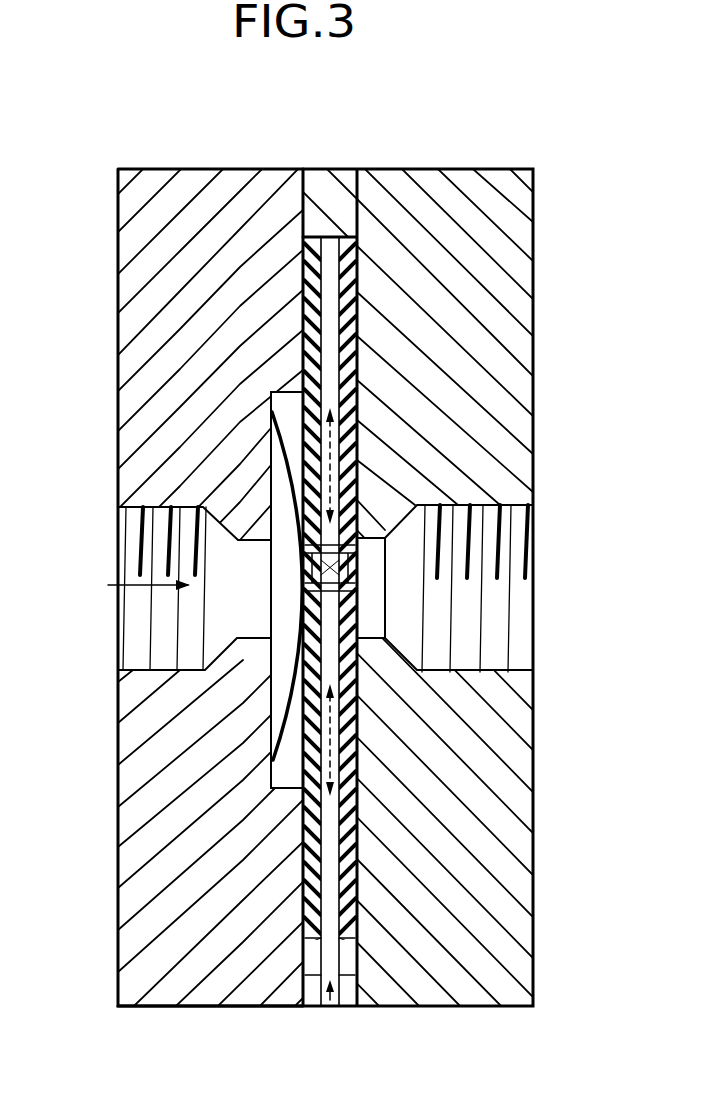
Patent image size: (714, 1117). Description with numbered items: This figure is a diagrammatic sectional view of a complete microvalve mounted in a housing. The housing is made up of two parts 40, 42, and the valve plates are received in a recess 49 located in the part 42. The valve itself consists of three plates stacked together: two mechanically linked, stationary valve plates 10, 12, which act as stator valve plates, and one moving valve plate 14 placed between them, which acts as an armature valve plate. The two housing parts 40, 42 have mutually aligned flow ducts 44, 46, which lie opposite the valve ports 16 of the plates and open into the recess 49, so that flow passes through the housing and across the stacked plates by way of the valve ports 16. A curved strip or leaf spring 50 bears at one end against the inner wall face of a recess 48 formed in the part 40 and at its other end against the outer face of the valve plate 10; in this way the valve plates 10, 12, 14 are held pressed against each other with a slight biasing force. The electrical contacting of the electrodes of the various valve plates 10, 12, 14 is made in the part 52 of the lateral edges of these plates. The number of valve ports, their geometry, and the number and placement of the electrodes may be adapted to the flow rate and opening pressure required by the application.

The stationary valve plate 10 is at (303, 250).
The stationary valve plate 12 is at (352, 237).
The moving valve plate 14 is at (312, 870).
The valve ports 16 is at (345, 580).
The housing part 40 is at (145, 318).
The housing part 42 is at (533, 347).
The flow duct 44 is at (130, 617).
The flow duct 46 is at (520, 617).
The recess 48 is at (280, 682).
The recess 49 is at (335, 240).
The leaf spring 50 is at (300, 646).
The contacting part 52 is at (331, 1002).